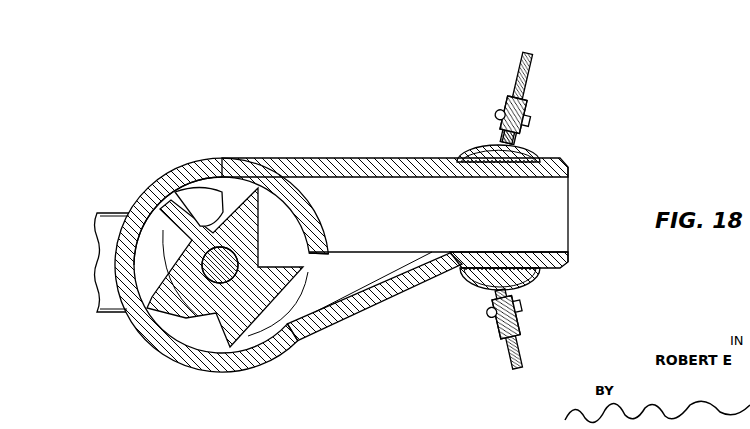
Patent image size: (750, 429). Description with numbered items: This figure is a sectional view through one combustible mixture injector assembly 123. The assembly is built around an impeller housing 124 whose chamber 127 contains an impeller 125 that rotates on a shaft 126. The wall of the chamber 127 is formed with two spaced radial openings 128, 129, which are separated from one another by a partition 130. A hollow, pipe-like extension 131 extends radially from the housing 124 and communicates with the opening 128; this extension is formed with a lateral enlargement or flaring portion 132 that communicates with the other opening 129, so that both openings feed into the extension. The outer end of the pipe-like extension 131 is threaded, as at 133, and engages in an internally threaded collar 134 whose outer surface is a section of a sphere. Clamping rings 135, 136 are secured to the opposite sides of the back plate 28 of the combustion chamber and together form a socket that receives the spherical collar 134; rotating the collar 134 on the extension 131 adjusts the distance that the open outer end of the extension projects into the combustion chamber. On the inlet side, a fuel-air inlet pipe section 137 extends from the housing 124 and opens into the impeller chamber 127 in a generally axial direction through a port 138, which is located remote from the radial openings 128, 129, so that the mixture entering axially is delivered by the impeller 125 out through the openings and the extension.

The back plate 28 is at (530, 57).
The injector assembly 123 is at (335, 124).
The impeller housing 124 is at (210, 162).
The impeller 125 is at (150, 312).
The shaft 126 is at (260, 244).
The chamber 127 is at (231, 350).
The radial opening 128 is at (290, 160).
The radial opening 129 is at (300, 320).
The partition 130 is at (318, 233).
The pipe-like extension 131 is at (357, 162).
The lateral enlargement or flaring portion 132 is at (380, 300).
The threads 133 is at (548, 163).
The internally threaded collar 134 is at (470, 152).
The clamping ring 135 is at (506, 97).
The clamping ring 136 is at (524, 100).
The fuel-air inlet pipe section 137 is at (112, 213).
The port 138 is at (182, 320).